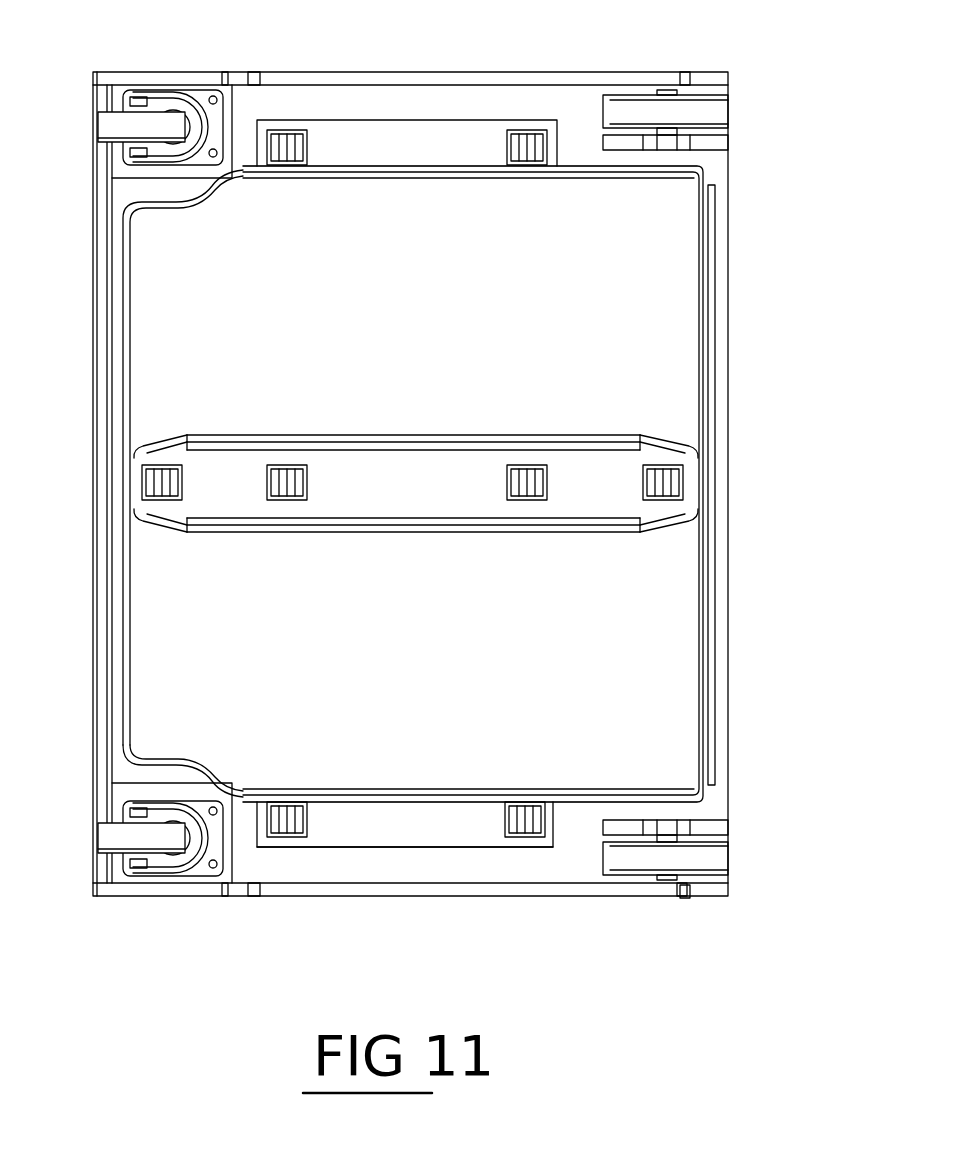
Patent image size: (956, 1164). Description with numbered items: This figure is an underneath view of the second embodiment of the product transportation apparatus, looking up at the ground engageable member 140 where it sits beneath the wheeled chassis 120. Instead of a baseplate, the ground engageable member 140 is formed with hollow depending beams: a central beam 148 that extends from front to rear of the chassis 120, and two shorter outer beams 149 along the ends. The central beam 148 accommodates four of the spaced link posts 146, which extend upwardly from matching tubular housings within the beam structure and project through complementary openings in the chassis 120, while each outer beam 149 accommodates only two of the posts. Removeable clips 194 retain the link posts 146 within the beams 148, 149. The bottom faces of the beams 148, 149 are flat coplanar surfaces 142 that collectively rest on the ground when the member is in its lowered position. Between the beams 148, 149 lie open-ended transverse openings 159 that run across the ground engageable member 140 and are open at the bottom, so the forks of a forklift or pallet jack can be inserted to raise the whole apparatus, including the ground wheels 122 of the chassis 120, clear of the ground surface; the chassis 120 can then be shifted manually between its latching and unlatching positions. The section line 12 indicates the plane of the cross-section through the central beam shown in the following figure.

The section line 12 is at (80, 478).
The wheeled chassis 120 is at (733, 805).
The ground wheels 122 is at (146, 838).
The ground engageable member 140 is at (680, 640).
The flat coplanar surfaces 142 is at (590, 500).
The link posts 146 is at (307, 493).
The central beam 148 is at (633, 437).
The outer beams 149 is at (487, 130).
The transverse openings 159 is at (602, 303).
The removeable clips 194 is at (527, 483).